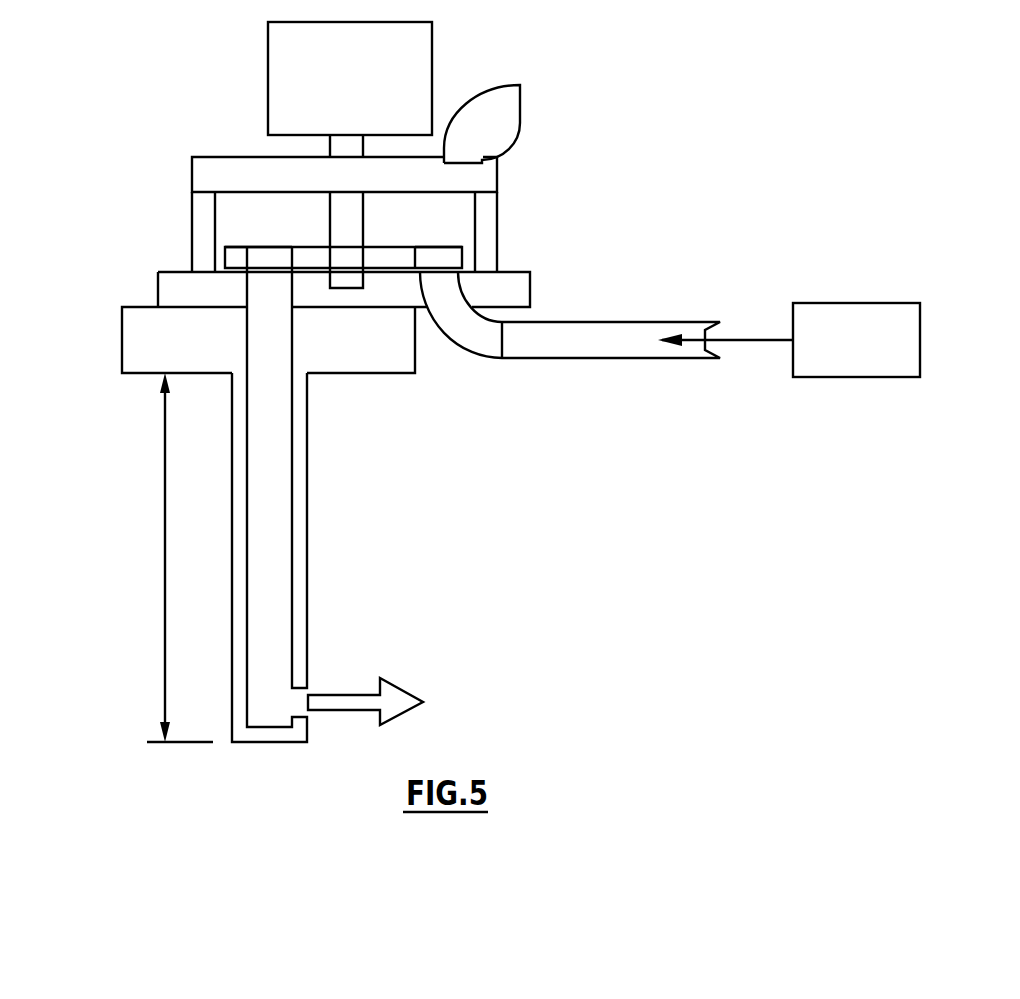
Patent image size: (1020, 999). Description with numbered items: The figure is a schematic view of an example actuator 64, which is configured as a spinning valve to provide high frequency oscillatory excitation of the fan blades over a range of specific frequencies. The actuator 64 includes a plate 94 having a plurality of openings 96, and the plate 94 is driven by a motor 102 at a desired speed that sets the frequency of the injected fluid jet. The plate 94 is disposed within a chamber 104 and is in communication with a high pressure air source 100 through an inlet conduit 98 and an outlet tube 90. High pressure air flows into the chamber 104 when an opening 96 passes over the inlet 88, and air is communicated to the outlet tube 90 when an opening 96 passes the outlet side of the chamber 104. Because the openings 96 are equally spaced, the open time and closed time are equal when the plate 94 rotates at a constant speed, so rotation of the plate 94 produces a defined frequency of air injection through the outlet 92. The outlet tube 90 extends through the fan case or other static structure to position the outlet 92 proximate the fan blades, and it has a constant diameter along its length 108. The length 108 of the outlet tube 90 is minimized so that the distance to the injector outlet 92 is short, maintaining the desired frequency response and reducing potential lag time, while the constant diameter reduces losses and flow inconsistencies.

The actuator 64 is at (89, 134).
The inlet 88 is at (461, 258).
The outlet tube 90 is at (232, 510).
The outlet 92 is at (322, 678).
The plate 94 is at (387, 258).
The opening 96 is at (253, 233).
The inlet conduit 98 is at (575, 322).
The high pressure air source 100 is at (865, 303).
The motor 102 is at (432, 40).
The chamber 104 is at (268, 207).
The length 108 is at (165, 478).